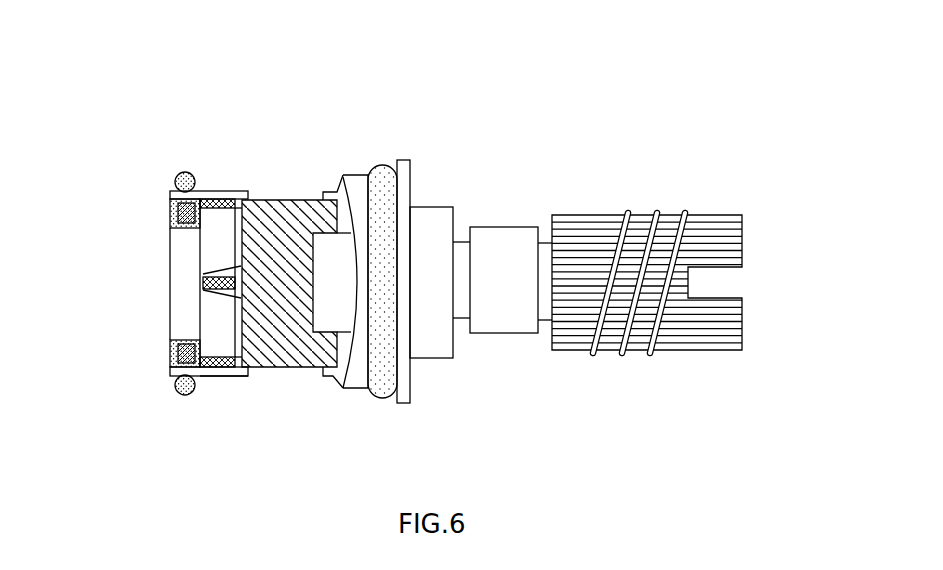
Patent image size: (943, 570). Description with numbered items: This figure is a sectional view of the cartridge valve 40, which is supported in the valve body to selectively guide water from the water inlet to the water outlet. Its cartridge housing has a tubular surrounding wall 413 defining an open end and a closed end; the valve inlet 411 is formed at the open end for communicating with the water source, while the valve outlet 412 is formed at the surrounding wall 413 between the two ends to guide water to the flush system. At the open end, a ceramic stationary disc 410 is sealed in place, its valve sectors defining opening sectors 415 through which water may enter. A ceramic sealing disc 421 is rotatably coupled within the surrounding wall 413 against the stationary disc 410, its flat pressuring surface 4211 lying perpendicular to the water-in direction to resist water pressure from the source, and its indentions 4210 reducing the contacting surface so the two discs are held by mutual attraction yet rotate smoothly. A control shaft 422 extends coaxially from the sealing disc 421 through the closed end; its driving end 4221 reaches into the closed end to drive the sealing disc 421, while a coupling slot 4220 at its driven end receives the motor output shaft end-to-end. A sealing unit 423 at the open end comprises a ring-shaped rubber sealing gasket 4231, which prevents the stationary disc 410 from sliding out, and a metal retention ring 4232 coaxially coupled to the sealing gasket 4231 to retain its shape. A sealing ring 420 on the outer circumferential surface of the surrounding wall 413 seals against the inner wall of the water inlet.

The cartridge valve 40 is at (92, 216).
The stationary disc 410 is at (222, 204).
The valve inlet 411 is at (153, 295).
The valve outlet 412 is at (303, 377).
The surrounding wall 413 is at (230, 373).
The opening sectors 415 is at (215, 230).
The sealing ring 420 is at (188, 392).
The sealing disc 421 is at (298, 221).
The control shaft 422 is at (517, 212).
The sealing unit 423 is at (105, 500).
The indentions 4210 is at (244, 229).
The flat pressuring surface 4211 is at (233, 257).
The coupling slot 4220 is at (740, 282).
The driving end 4221 is at (343, 265).
The sealing gasket 4231 is at (124, 344).
The retention ring 4232 is at (188, 341).